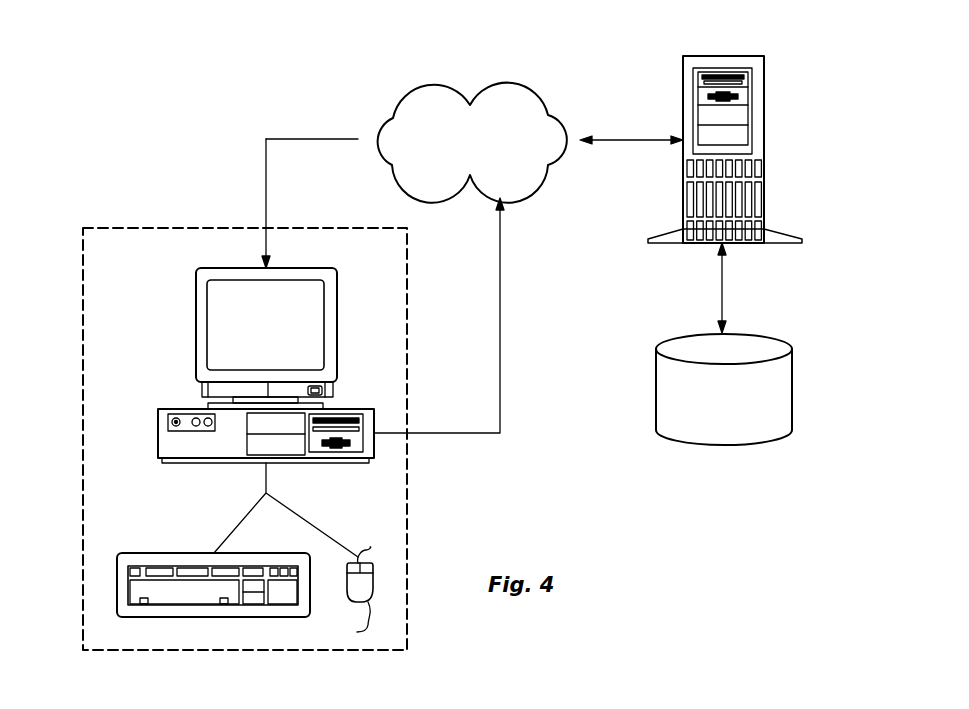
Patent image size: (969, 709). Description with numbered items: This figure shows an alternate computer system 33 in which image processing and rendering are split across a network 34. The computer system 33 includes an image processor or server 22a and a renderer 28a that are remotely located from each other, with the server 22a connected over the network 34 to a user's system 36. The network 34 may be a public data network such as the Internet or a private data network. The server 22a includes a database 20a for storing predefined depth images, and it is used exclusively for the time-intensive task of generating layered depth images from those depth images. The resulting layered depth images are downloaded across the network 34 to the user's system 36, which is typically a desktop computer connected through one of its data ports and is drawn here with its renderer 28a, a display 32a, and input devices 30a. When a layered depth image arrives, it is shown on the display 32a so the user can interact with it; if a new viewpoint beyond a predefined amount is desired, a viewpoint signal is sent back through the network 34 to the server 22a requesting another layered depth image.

The database 20a is at (790, 372).
The server 22a is at (741, 37).
The renderer 28a is at (158, 421).
The input devices (keyboard and mouse) 30a is at (287, 617).
The display 32a is at (283, 268).
The computer system 33 is at (214, 144).
The network 34 is at (518, 60).
The user's system 36 is at (76, 308).